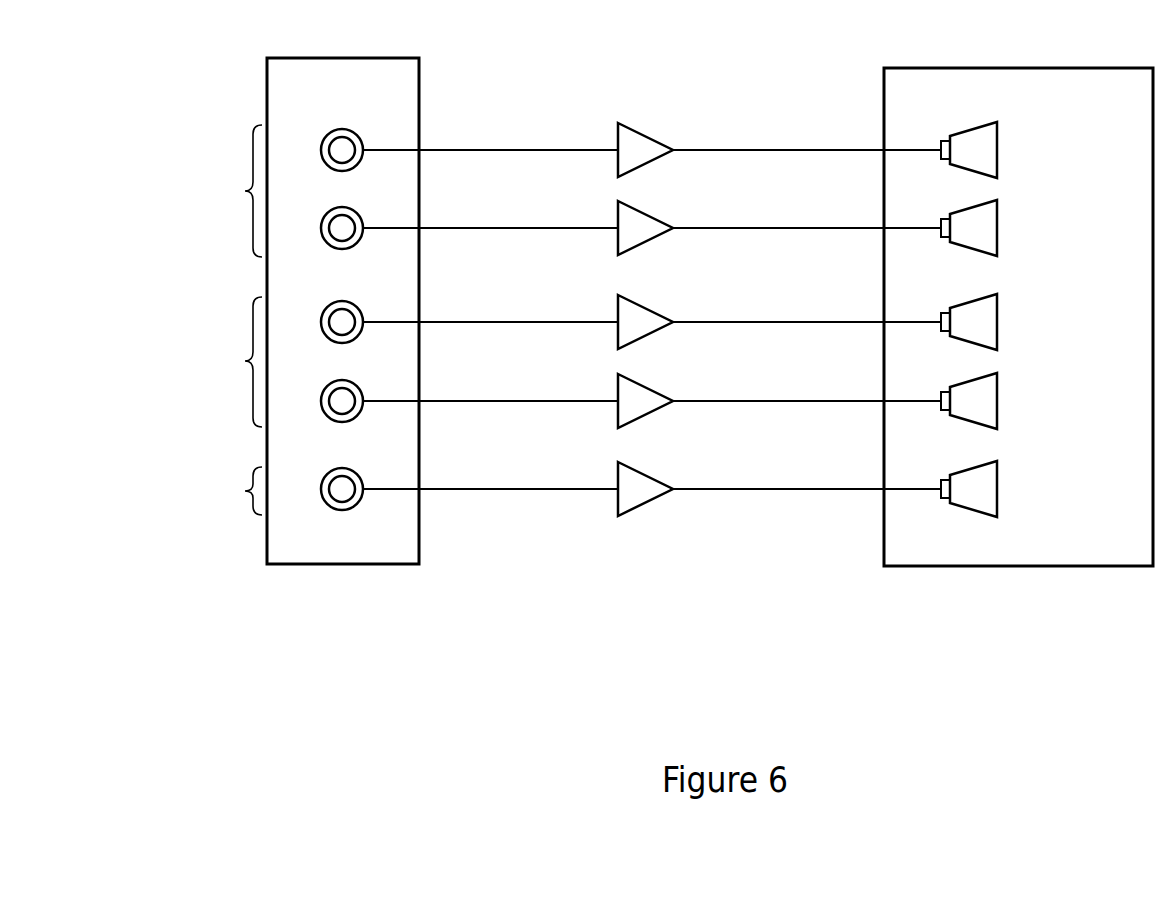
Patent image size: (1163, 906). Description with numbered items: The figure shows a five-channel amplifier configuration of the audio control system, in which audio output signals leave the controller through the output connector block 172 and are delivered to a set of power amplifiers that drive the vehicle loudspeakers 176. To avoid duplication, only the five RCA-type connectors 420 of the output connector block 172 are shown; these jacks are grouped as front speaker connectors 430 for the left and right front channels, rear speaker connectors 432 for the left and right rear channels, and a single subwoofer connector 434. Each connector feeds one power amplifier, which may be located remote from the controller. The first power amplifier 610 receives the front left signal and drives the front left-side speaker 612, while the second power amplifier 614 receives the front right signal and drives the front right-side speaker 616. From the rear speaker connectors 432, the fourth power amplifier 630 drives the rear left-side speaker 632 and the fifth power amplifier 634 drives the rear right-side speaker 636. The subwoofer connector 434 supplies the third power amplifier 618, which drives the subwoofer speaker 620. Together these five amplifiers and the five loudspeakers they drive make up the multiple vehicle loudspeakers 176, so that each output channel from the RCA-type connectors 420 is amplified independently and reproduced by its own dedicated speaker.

The output connector block 172 is at (381, 75).
The RCA-type connectors 420 is at (323, 99).
The front speaker connectors 430 is at (245, 191).
The rear speaker connectors 432 is at (245, 361).
The subwoofer connector 434 is at (245, 491).
The first power amplifier 610 is at (645, 136).
The second power amplifier 614 is at (645, 214).
The fourth power amplifier 630 is at (645, 308).
The fifth power amplifier 634 is at (645, 387).
The third power amplifier 618 is at (645, 475).
The vehicle loudspeakers 176 is at (1140, 109).
The front left-side speaker 612 is at (999, 150).
The front right-side speaker 616 is at (999, 228).
The rear left-side speaker 632 is at (999, 322).
The rear right-side speaker 636 is at (999, 401).
The subwoofer speaker 620 is at (999, 489).